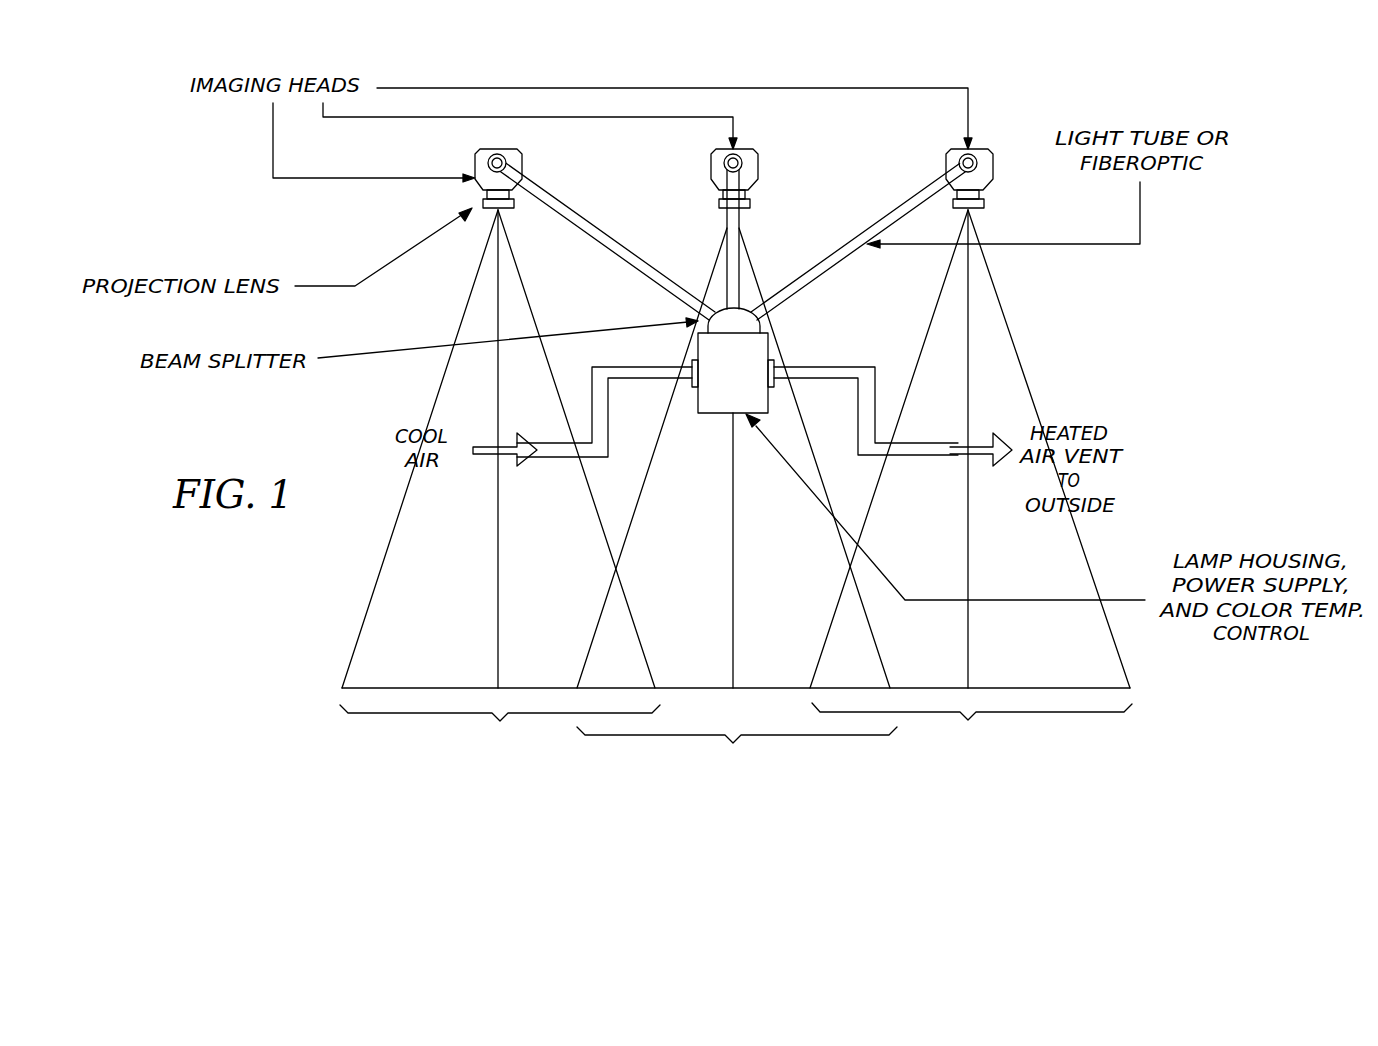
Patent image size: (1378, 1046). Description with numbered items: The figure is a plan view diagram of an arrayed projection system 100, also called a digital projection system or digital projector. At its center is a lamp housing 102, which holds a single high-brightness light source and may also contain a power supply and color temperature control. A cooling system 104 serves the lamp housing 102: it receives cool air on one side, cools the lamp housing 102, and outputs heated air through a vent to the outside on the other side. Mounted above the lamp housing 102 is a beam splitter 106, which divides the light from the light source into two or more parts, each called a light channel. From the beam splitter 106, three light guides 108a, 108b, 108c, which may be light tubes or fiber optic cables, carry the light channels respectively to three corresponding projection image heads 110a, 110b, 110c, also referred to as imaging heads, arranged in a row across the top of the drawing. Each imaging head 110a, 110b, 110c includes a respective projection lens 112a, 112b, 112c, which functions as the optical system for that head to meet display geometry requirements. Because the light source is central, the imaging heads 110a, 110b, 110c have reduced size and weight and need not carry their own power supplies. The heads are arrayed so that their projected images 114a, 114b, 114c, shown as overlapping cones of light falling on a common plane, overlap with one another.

The arrayed projection system 100 is at (1320, 744).
The lamp housing 102 is at (715, 413).
The cooling system 104 is at (550, 458).
The beam splitter 106 is at (762, 323).
The light guide 108a is at (607, 233).
The light guide 108b is at (741, 222).
The light guide 108c is at (866, 229).
The projection image head 110a is at (522, 162).
The projection image head 110b is at (758, 163).
The projection image head 110c is at (944, 163).
The projection lens 112a is at (482, 212).
The projection lens 112b is at (718, 197).
The projection lens 112c is at (985, 201).
The projected image 114a is at (500, 482).
The projected image 114b is at (737, 501).
The projected image 114c is at (971, 481).